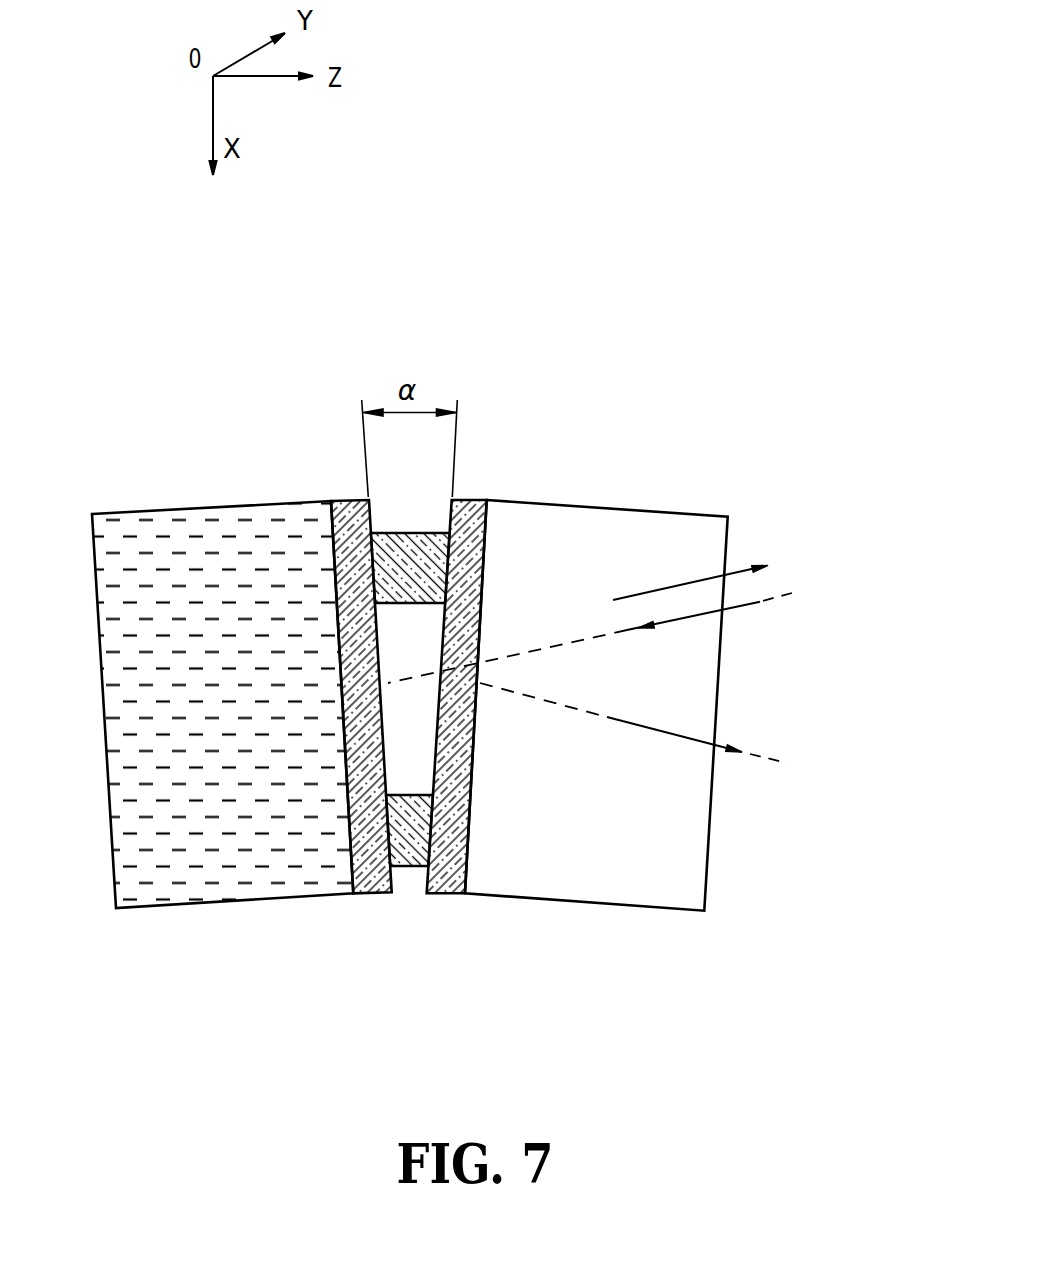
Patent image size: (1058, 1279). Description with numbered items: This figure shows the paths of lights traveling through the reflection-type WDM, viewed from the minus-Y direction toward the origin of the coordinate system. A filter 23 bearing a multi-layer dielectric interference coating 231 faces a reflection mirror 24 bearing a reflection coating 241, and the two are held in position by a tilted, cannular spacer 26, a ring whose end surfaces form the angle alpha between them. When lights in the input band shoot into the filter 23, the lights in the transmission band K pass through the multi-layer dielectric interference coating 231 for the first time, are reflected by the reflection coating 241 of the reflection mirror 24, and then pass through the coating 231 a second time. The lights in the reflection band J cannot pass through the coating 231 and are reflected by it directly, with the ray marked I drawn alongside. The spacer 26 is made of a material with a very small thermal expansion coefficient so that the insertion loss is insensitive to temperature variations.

The filter 23 is at (634, 872).
The reflection mirror 24 is at (197, 865).
The tilted cannular spacer 26 is at (407, 557).
The multi-layer dielectric interference coating 231 is at (458, 875).
The reflection coating 241 is at (366, 878).
The transmission band K is at (739, 572).
The reflected light ray I is at (762, 602).
The reflection band J is at (766, 758).